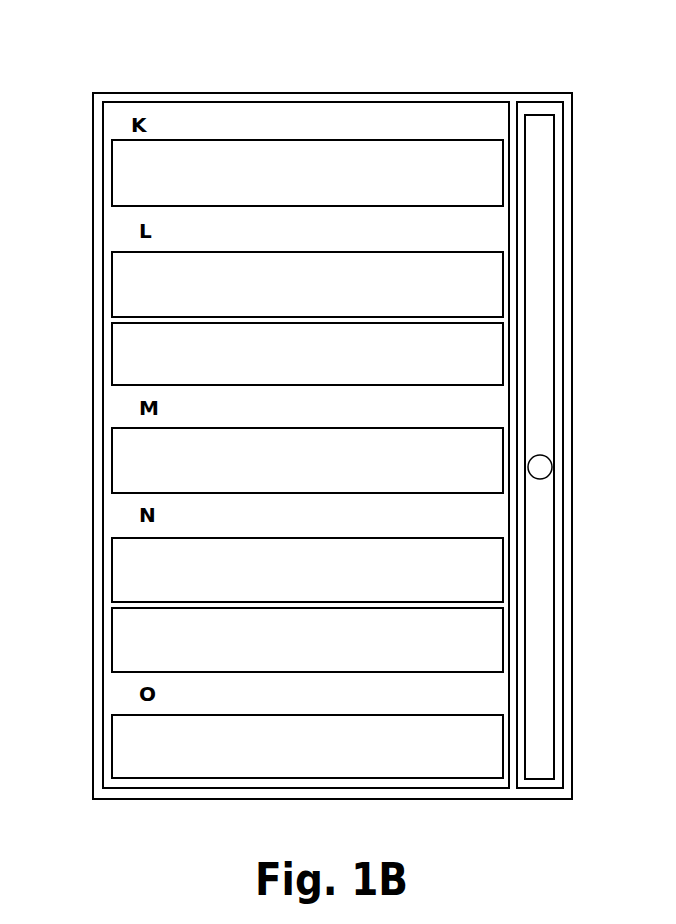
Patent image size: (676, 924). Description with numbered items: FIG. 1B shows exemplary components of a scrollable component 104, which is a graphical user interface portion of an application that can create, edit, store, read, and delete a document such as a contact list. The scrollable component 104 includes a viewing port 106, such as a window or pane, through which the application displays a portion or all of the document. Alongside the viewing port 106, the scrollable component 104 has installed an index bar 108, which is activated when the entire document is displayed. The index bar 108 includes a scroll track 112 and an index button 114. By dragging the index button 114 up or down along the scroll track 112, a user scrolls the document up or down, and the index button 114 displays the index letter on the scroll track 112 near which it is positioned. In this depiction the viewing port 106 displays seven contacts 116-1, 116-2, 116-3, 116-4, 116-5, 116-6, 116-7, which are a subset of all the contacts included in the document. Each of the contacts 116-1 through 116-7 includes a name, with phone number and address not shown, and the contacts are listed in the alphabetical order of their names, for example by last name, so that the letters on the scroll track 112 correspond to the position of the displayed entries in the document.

The scrollable component 104 is at (333, 93).
The viewing port 106 is at (217, 102).
The index bar 108 is at (540, 102).
The scroll track 112 is at (555, 233).
The index button 114 is at (553, 468).
The contact 116-1 is at (110, 170).
The contact 116-2 is at (110, 282).
The contact 116-3 is at (110, 348).
The contact 116-4 is at (110, 458).
The contact 116-5 is at (110, 568).
The contact 116-6 is at (110, 638).
The contact 116-7 is at (110, 745).